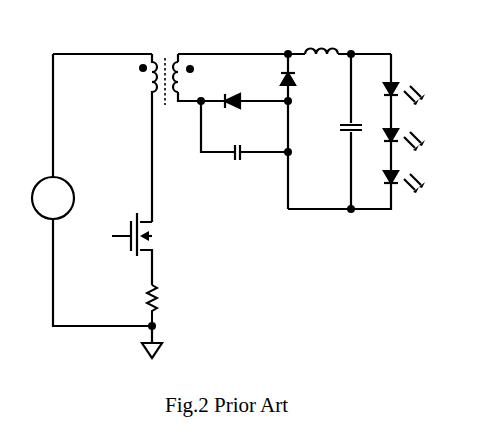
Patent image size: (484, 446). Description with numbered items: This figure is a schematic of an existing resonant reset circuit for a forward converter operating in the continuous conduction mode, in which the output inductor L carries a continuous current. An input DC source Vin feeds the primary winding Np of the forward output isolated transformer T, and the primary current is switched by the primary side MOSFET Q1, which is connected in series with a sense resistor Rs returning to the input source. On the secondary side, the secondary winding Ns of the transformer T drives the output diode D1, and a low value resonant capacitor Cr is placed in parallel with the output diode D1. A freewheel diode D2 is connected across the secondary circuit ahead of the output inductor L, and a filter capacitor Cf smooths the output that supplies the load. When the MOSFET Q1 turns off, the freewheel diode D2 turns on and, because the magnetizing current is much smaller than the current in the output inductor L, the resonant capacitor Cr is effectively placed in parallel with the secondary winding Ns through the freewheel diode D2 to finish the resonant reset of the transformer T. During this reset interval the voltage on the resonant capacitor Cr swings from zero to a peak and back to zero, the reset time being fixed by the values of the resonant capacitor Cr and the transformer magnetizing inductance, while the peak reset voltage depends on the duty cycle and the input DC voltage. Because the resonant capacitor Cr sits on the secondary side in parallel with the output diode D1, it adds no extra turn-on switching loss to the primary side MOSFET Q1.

The input voltage source Vin is at (53, 198).
The forward output isolated transformer T is at (161, 68).
The primary winding Np is at (140, 138).
The secondary winding Ns is at (188, 78).
The output diode D1 is at (236, 92).
The freewheel diode D2 is at (299, 79).
The resonant capacitor Cr is at (242, 164).
The output inductor L is at (321, 43).
The filter capacitor Cf is at (346, 139).
The primary side MOSFET Q1 is at (145, 249).
The sense resistor Rs is at (141, 305).